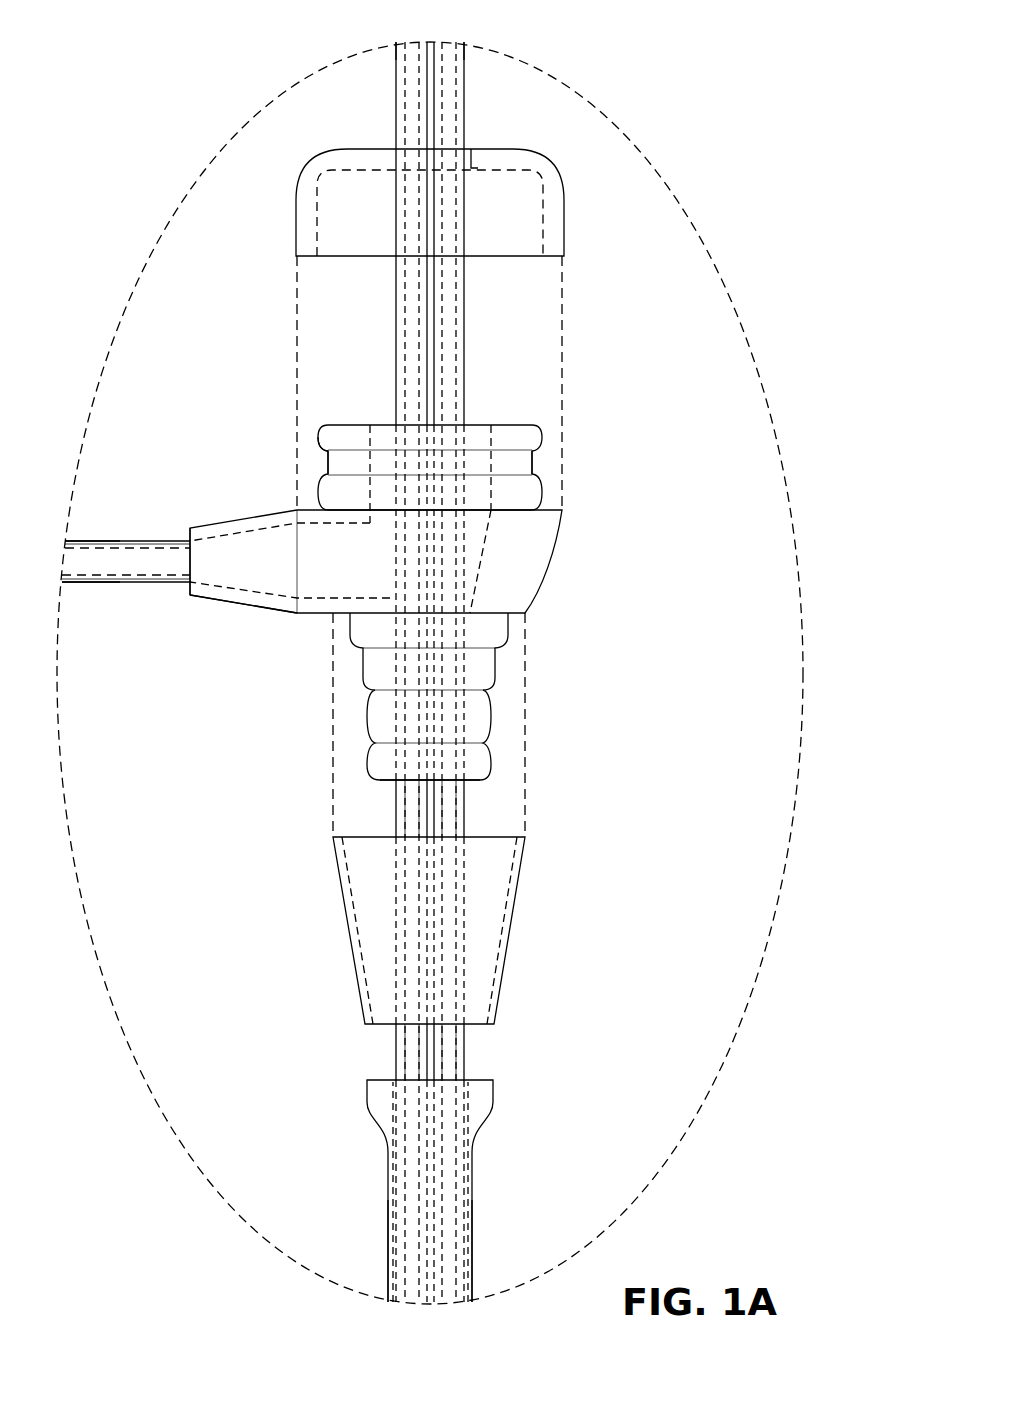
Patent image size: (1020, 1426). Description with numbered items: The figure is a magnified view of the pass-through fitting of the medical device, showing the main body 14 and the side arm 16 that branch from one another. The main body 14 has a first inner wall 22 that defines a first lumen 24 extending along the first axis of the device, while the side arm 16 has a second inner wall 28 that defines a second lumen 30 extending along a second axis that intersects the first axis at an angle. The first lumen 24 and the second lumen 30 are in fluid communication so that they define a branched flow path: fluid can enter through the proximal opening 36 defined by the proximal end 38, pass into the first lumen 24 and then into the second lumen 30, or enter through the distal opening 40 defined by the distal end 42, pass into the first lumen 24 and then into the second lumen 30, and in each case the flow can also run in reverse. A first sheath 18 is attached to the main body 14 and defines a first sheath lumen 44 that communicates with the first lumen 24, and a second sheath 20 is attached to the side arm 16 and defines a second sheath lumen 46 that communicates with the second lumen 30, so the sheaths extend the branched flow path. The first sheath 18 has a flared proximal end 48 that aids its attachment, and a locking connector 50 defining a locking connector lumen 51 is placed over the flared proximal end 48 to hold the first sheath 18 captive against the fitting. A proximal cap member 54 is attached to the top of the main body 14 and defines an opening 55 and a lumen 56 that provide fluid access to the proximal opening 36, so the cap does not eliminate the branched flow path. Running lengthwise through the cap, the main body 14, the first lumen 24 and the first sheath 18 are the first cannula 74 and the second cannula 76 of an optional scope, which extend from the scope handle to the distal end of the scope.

The main body 14 is at (566, 563).
The side arm 16 is at (275, 613).
The first sheath 18 is at (480, 1127).
The second sheath 20 is at (128, 583).
The first inner wall 22 is at (490, 438).
The first lumen 24 is at (472, 488).
The second inner wall 28 is at (243, 525).
The second lumen 30 is at (227, 563).
The proximal opening 36 is at (383, 424).
The proximal end 38 is at (306, 427).
The distal opening 40 is at (473, 780).
The distal end 42 is at (348, 779).
The first sheath lumen 44 is at (467, 1093).
The second sheath lumen 46 is at (128, 563).
The flared proximal end 48 is at (343, 1128).
The locking connector 50 is at (512, 930).
The locking connector lumen 51 is at (488, 882).
The proximal cap member 54 is at (564, 218).
The opening 55 is at (472, 168).
The lumen 56 is at (523, 230).
The first cannula 74 is at (397, 62).
The second cannula 76 is at (463, 62).